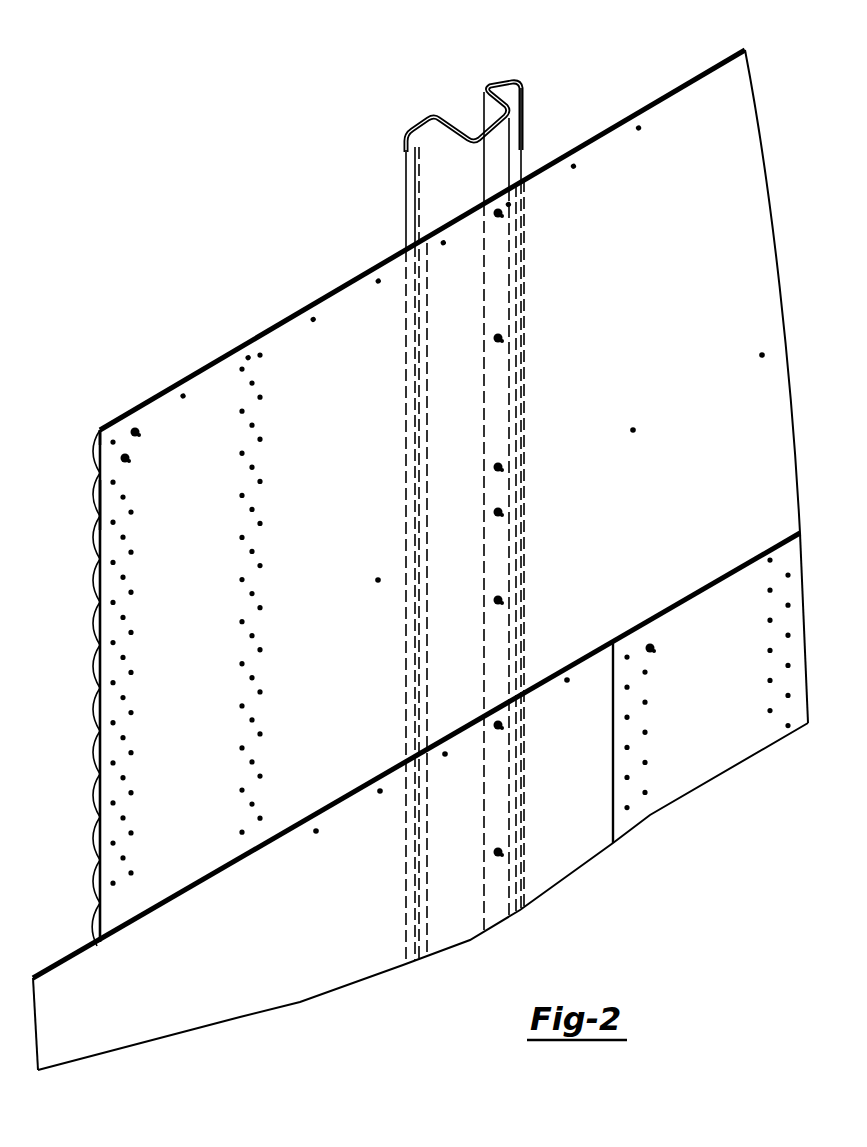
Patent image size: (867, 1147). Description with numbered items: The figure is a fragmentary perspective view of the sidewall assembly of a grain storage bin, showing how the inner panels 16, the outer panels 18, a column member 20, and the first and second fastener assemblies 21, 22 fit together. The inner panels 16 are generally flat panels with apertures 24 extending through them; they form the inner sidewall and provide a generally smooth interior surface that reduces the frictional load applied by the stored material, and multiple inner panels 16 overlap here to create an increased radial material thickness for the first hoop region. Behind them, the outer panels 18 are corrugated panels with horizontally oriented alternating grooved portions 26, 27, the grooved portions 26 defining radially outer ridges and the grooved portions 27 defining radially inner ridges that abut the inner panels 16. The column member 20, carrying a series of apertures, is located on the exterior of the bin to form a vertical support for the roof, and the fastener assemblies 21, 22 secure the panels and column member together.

The inner panels 16 is at (745, 181).
The outer panels 18 is at (98, 432).
The column members 20 is at (497, 82).
The first fastener assemblies 21 is at (503, 224).
The second fastener assemblies 22 is at (137, 466).
The apertures 24 is at (636, 429).
The grooved portions 26 is at (93, 471).
The grooved portions 27 is at (98, 500).